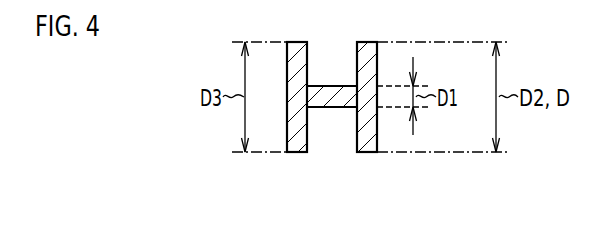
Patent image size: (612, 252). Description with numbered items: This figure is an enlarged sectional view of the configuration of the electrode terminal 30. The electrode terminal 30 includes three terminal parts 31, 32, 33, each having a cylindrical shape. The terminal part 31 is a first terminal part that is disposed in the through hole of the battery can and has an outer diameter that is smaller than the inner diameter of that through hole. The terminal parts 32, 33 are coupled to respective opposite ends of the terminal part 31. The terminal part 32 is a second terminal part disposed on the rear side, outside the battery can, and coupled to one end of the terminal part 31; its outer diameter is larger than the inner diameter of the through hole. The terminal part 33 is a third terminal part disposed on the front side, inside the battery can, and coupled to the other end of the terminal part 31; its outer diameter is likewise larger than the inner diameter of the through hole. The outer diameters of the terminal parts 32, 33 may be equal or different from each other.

The electrode terminal 30 is at (345, 132).
The terminal part 31 is at (333, 97).
The terminal part 32 is at (370, 150).
The terminal part 33 is at (300, 150).